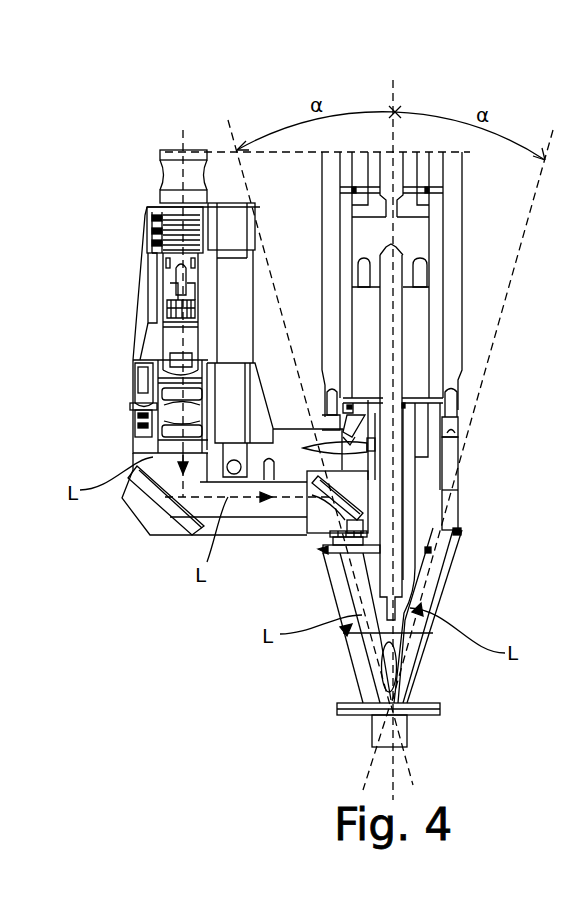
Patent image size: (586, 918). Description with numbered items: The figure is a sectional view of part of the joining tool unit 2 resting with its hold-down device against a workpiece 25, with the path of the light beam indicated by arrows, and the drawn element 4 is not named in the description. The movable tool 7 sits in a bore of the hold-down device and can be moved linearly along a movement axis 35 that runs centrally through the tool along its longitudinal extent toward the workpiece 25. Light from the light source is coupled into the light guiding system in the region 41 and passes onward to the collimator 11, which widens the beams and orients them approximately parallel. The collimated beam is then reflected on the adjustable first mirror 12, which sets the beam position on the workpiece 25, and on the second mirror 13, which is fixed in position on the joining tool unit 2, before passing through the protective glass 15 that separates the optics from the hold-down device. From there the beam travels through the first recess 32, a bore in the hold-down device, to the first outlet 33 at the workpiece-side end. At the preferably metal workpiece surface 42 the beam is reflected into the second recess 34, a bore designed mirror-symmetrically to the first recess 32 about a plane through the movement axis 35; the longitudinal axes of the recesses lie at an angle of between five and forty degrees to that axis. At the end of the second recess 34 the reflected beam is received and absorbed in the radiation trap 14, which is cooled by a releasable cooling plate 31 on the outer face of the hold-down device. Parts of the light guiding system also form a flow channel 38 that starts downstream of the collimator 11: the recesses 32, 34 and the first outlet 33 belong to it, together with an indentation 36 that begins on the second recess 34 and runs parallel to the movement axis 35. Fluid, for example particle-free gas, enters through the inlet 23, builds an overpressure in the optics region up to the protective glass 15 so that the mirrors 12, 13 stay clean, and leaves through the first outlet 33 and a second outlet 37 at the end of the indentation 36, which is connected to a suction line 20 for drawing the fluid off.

The joining tool unit 2 is at (244, 636).
The nozzle 4 is at (403, 735).
The movable tool 7 is at (407, 310).
The collimator 11 is at (133, 425).
The first mirror 12 is at (173, 507).
The second mirror 13 is at (308, 520).
The radiation trap 14 is at (461, 532).
The protective glass 15 is at (322, 551).
The suction line 20 is at (237, 305).
The inlet 23 is at (305, 446).
The workpiece 25 is at (441, 708).
The cooling plate 31 is at (452, 517).
The first recess 32 is at (366, 630).
The first outlet 33 is at (373, 703).
The second recess 34 is at (420, 624).
The movement axis 35 is at (397, 98).
The indentation 36 is at (427, 465).
The second outlet 37 is at (430, 442).
The flow channel 38 is at (430, 550).
The region 41 is at (176, 170).
The workpiece surface 42 is at (442, 698).